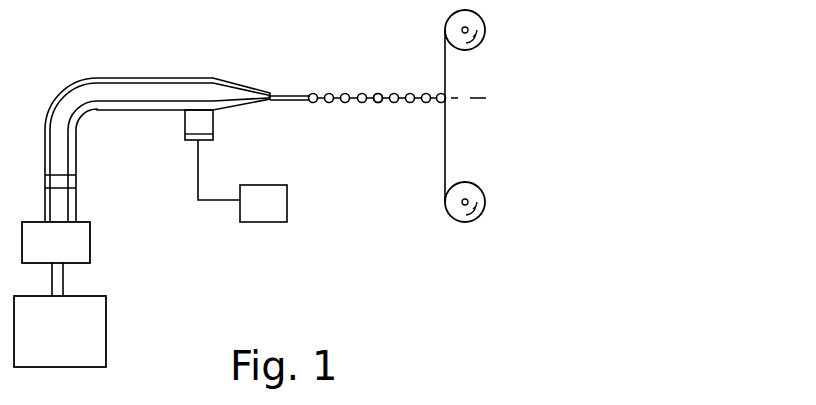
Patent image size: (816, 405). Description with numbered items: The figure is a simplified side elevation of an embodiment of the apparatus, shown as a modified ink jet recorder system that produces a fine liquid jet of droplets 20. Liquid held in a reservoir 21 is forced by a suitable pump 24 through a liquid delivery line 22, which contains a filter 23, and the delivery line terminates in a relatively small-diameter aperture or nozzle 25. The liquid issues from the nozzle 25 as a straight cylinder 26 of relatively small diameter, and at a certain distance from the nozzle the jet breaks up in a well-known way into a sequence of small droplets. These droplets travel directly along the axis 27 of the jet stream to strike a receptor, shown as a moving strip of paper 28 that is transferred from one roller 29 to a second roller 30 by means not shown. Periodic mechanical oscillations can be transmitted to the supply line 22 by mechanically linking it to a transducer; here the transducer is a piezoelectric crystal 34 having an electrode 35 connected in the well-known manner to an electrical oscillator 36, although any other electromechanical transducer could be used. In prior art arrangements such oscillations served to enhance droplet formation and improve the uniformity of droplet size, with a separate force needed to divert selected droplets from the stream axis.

The liquid jet of droplets 20 is at (345, 95).
The reservoir 21 is at (100, 311).
The liquid delivery line 22 is at (168, 87).
The filter 23 is at (77, 181).
The pump 24 is at (85, 230).
The aperture (nozzle) 25 is at (263, 92).
The straight cylinder 26 is at (285, 101).
The axis of the jet stream 27 is at (380, 103).
The moving strip of paper 28 is at (446, 125).
The roller 29 is at (482, 18).
The roller 30 is at (480, 187).
The piezoelectric crystal 34 is at (213, 126).
The electrode 35 is at (185, 140).
The electrical oscillator 36 is at (275, 212).